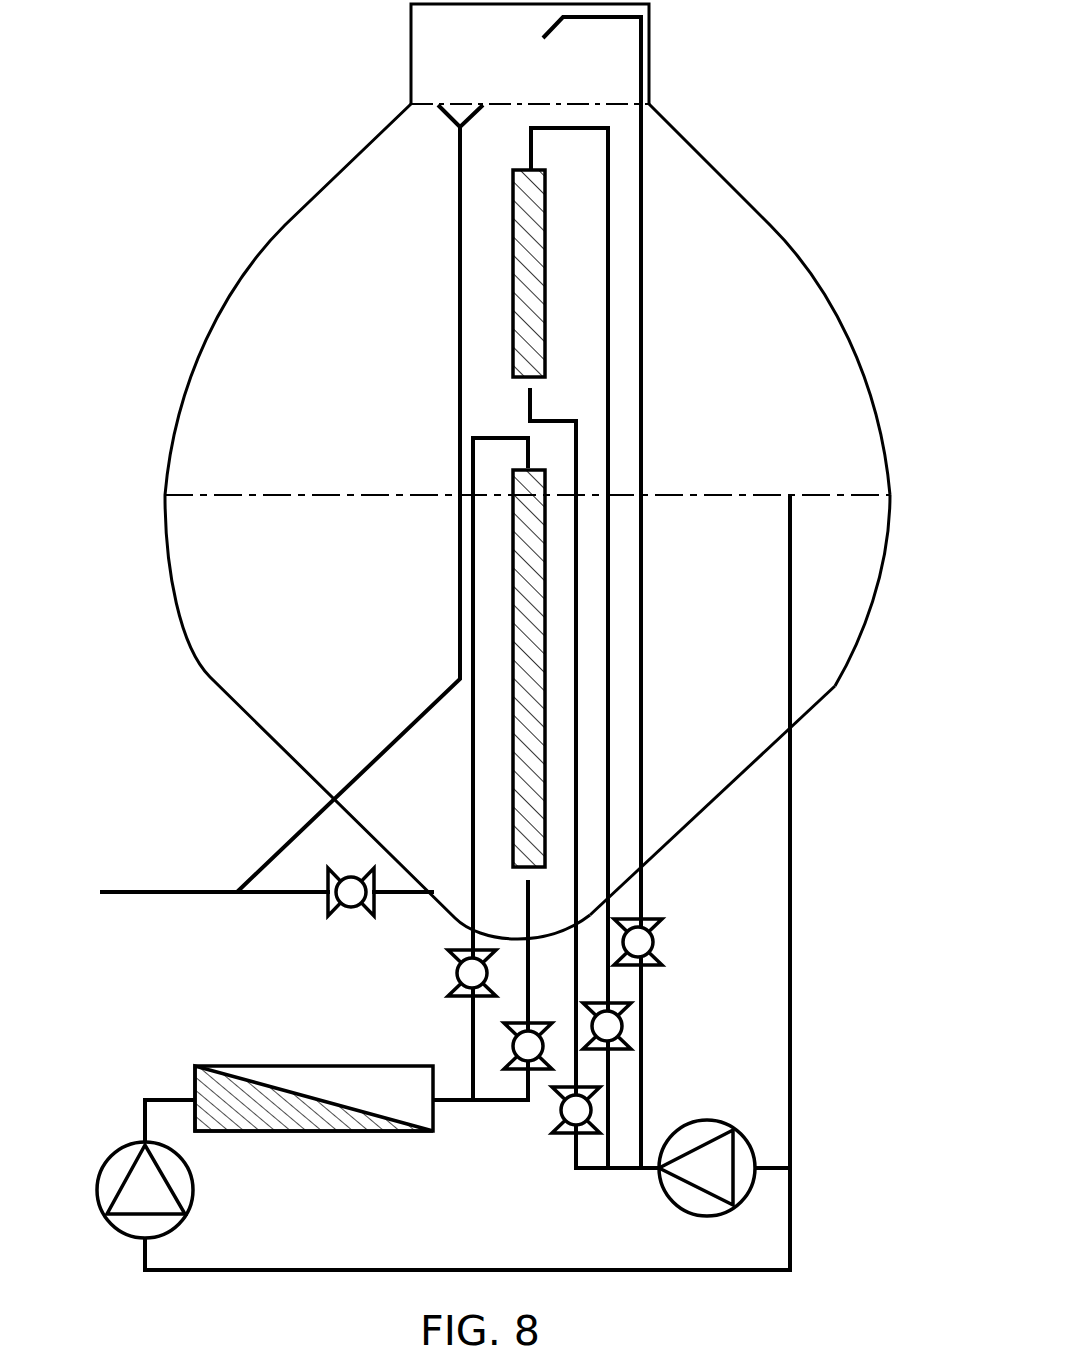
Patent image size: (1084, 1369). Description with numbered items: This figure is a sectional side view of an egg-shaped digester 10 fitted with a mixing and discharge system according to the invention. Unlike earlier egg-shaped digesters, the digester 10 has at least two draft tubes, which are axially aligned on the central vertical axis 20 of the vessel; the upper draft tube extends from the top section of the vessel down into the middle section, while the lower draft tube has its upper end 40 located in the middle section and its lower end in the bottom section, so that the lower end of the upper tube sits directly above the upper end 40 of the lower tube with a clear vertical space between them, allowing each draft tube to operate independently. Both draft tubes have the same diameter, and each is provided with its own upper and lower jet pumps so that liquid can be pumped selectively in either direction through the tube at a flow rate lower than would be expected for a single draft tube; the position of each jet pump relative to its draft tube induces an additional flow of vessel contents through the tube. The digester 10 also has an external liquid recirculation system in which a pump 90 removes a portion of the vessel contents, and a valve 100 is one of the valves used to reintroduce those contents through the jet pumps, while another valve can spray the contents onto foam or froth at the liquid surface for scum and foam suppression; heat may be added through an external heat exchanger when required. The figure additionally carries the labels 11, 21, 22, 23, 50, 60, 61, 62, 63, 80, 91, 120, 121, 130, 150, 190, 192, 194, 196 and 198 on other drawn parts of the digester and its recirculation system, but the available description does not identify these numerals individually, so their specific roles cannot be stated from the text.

The digester 10 is at (549, 264).
The second electrode rod 11 is at (507, 843).
The central vertical axis 20 is at (537, 147).
The second inlet pipe 21 is at (538, 395).
The third pipe 22 is at (514, 466).
The fourth pipe 23 is at (534, 904).
The upper end of lower draft tube 40 is at (540, 32).
The recirculation pipe 50 is at (786, 499).
The valve 60 is at (510, 1072).
The valve 61 is at (628, 1029).
The valve 62 is at (450, 977).
The valve 63 is at (558, 1138).
The valve 80 is at (662, 941).
The pump 90 is at (194, 1212).
The pump 91 is at (707, 1117).
The valve 100 is at (312, 1135).
The nozzle pipe 120 is at (445, 115).
The inlet pipe section 121 is at (395, 897).
The inlet valve 130 is at (326, 907).
The feed line 150 is at (163, 887).
The vessel 190 is at (531, 471).
The lower vessel wall 192 is at (681, 839).
The upper vessel wall 194 is at (721, 176).
The vessel head 196 is at (420, 55).
The vessel equator 198 is at (890, 466).